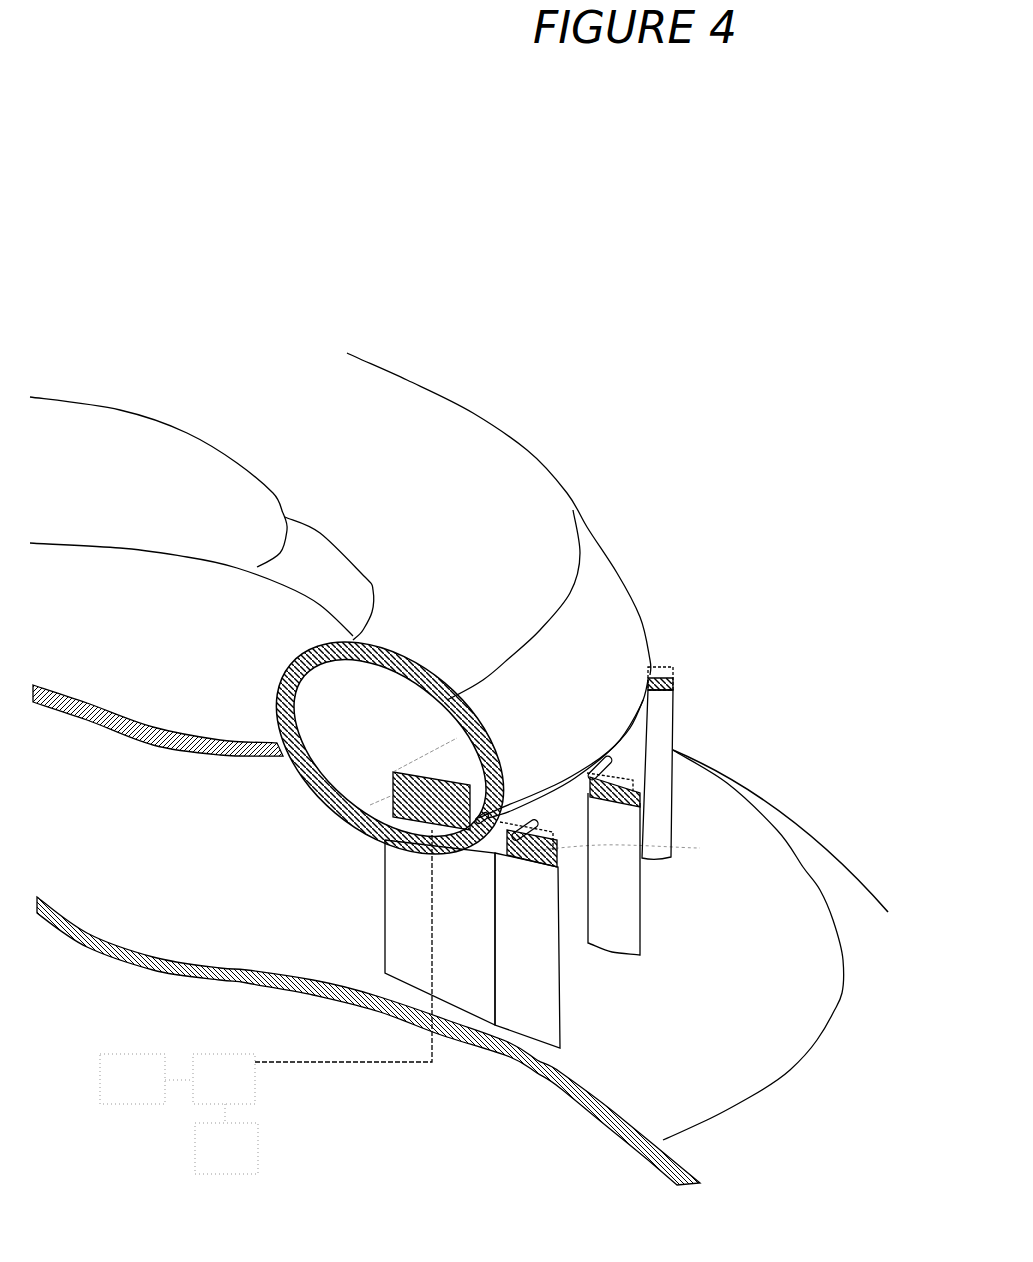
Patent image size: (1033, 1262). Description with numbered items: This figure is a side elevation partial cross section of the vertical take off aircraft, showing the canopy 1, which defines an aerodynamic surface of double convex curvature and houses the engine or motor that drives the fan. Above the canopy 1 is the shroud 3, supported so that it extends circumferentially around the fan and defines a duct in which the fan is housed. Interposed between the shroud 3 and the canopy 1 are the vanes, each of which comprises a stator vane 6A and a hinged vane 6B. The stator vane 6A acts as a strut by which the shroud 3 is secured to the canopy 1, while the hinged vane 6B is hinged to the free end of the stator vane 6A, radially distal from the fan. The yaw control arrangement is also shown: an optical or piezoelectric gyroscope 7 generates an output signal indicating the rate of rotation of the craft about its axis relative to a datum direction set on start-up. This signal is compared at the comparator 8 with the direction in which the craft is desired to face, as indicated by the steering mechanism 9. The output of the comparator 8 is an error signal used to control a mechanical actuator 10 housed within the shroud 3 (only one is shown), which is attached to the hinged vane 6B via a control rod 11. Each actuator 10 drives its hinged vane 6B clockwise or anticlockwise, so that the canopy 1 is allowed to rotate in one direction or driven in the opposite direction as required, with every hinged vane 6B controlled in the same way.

The canopy 1 is at (770, 875).
The shroud 3 is at (528, 503).
The stator vane 6A is at (407, 965).
The hinged vane 6B is at (492, 1057).
The gyroscope 7 is at (226, 1139).
The comparator 8 is at (312, 967).
The steering mechanism 9 is at (146, 1079).
The mechanical actuator 10 is at (377, 807).
The control rod 11 is at (673, 853).